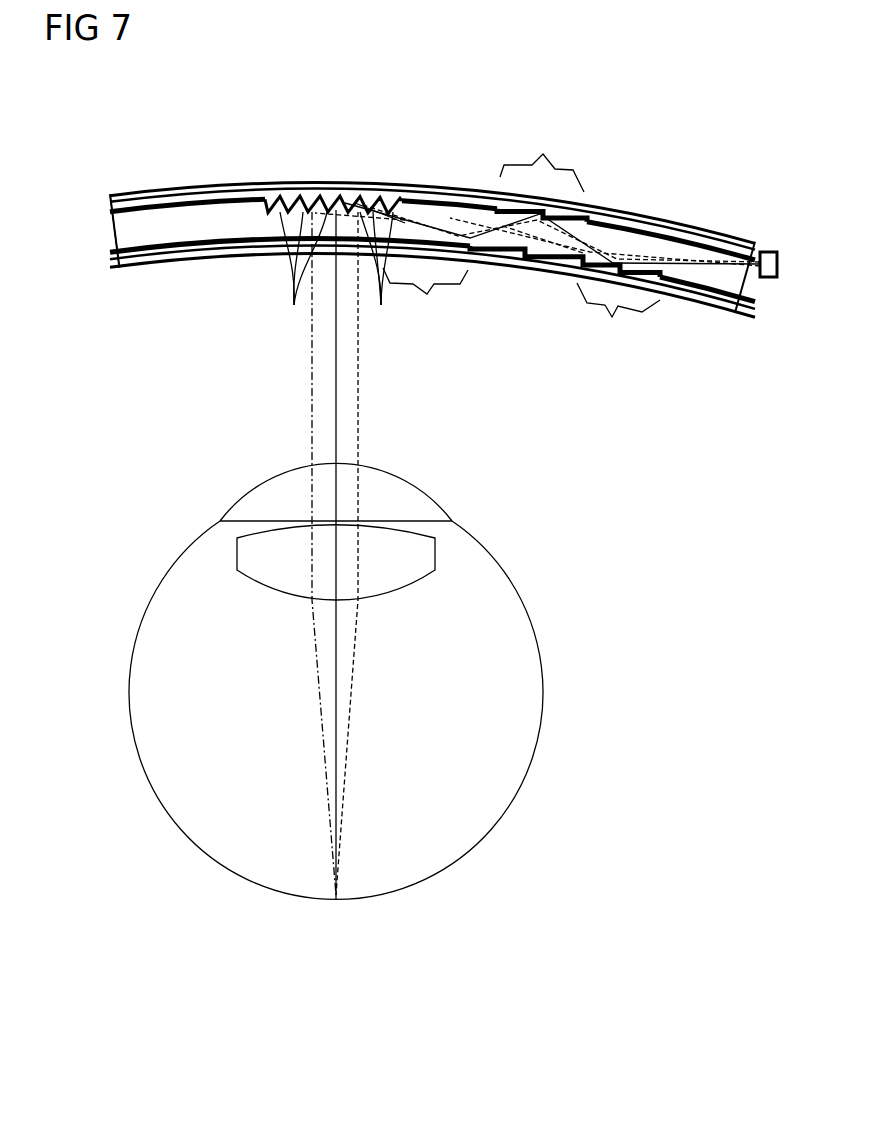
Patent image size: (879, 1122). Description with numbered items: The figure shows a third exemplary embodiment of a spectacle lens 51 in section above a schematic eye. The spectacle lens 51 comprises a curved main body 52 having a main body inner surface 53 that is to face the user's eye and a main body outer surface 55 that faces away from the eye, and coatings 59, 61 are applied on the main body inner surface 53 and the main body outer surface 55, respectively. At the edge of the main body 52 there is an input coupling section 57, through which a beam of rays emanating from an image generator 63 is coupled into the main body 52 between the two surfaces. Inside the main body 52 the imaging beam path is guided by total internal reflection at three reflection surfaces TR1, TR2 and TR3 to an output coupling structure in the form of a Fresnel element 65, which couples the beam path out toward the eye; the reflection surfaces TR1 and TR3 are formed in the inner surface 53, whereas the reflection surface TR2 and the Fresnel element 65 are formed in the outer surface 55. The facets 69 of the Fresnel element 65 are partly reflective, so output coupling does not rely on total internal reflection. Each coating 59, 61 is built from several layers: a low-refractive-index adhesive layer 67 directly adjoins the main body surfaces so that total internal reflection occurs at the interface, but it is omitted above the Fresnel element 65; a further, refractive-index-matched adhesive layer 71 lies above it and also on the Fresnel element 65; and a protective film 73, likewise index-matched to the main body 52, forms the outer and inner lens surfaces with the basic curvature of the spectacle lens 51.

The spectacle lens 51 is at (402, 92).
The main body 52 is at (130, 223).
The main body inner surface 53 is at (254, 262).
The main body outer surface 55 is at (160, 190).
The input coupling section 57 is at (746, 287).
The coating 59 is at (105, 251).
The coating 61 is at (105, 194).
The image generator 63 is at (767, 250).
The Fresnel element 65 is at (310, 196).
The adhesive layer 67 is at (248, 200).
The facets 69 is at (336, 277).
The further adhesive layer 71 is at (208, 199).
The protective film 73 is at (360, 188).
The reflection surface TR1 is at (618, 324).
The reflection surface TR2 is at (542, 155).
The reflection surface TR3 is at (425, 305).